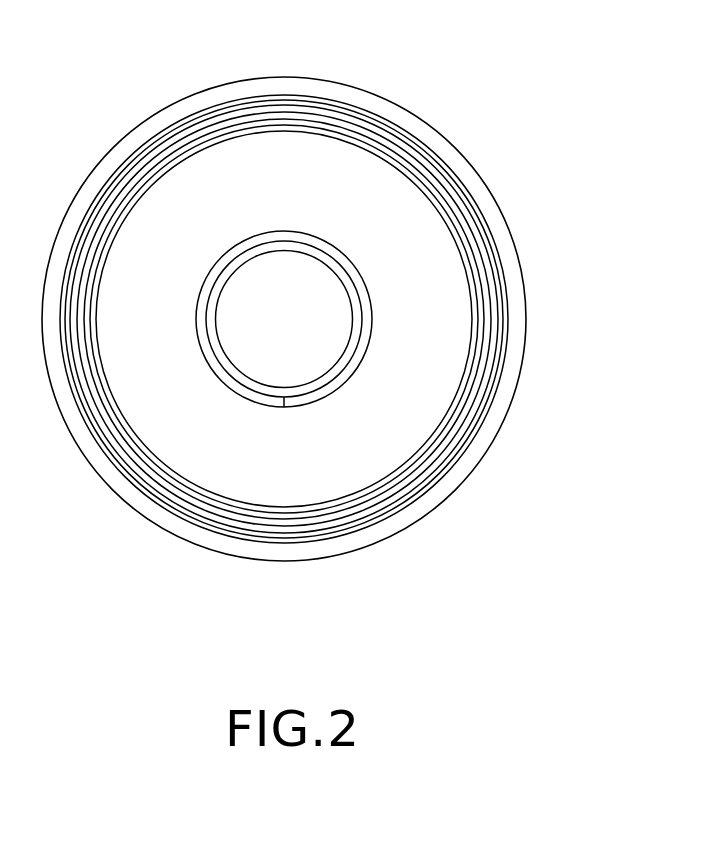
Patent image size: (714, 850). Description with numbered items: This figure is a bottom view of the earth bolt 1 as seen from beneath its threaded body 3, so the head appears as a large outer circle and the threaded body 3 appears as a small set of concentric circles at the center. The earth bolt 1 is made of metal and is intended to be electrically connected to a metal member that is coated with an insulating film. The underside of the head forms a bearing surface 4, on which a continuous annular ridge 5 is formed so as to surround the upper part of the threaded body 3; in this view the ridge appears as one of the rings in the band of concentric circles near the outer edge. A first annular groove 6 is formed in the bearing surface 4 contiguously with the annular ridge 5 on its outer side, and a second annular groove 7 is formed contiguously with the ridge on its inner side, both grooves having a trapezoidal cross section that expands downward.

The earth bolt 1 is at (493, 108).
The threaded body 3 is at (220, 382).
The bearing surface 4 is at (425, 230).
The annular ridge 5 is at (488, 367).
The first annular groove 6 is at (508, 317).
The second annular groove 7 is at (455, 417).